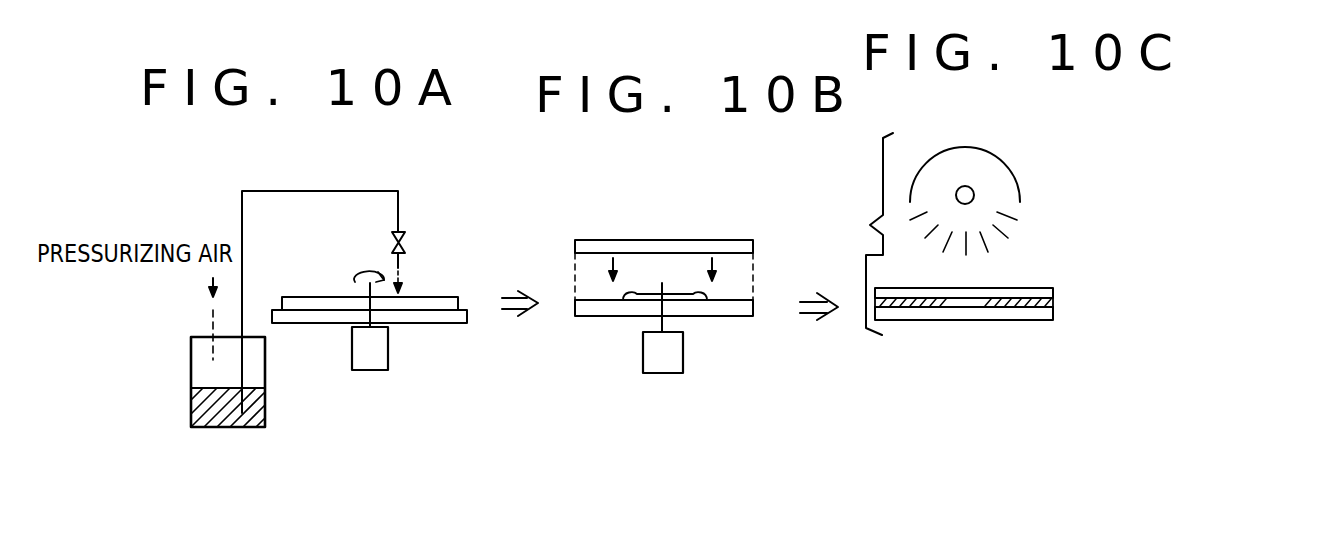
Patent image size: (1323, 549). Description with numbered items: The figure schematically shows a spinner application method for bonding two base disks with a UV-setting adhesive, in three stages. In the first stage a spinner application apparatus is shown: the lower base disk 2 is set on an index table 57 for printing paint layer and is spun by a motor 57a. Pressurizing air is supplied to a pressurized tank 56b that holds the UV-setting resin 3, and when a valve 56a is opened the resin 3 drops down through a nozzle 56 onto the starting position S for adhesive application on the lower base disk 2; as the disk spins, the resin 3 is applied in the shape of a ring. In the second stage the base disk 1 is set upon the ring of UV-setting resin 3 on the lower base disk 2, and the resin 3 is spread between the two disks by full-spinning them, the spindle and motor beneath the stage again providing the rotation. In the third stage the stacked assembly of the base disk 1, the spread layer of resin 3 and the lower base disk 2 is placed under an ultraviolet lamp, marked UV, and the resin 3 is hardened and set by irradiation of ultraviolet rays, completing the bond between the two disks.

In FIG. 10B, the base disk 1 is at (700, 240).
In FIG. 10C, the base disk 1 is at (1040, 288).
In FIG. 10A, the lower base disk 2 is at (450, 327).
In FIG. 10B, the lower base disk 2 is at (725, 317).
In FIG. 10C, the lower base disk 2 is at (1050, 322).
In FIG. 10A, the UV-setting resin 3 is at (265, 407).
In FIG. 10B, the UV-setting resin 3 is at (630, 300).
In FIG. 10C, the UV-setting resin 3 is at (1053, 303).
In FIG. 10A, the starting position for adhesive application S is at (403, 285).
In FIG. 10A, the nozzle 56 is at (400, 262).
In FIG. 10A, the valve 56a is at (407, 232).
In FIG. 10A, the pressurized tank 56b is at (222, 428).
In FIG. 10A, the index table 57 is at (413, 327).
In FIG. 10A, the motor 57a is at (370, 372).
In FIG. 10C, the ultraviolet lamp UV is at (1018, 178).